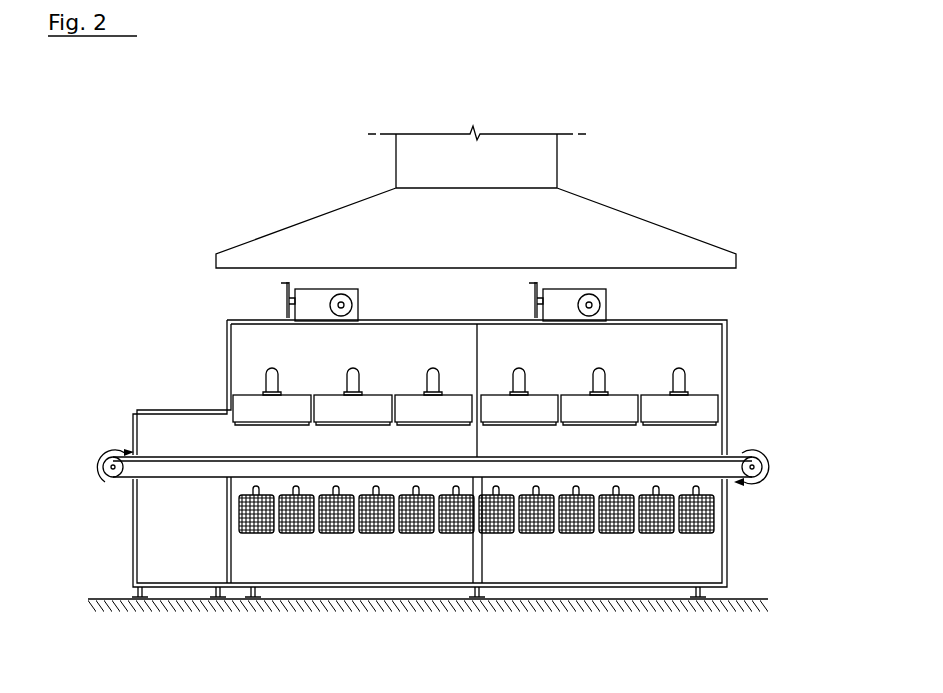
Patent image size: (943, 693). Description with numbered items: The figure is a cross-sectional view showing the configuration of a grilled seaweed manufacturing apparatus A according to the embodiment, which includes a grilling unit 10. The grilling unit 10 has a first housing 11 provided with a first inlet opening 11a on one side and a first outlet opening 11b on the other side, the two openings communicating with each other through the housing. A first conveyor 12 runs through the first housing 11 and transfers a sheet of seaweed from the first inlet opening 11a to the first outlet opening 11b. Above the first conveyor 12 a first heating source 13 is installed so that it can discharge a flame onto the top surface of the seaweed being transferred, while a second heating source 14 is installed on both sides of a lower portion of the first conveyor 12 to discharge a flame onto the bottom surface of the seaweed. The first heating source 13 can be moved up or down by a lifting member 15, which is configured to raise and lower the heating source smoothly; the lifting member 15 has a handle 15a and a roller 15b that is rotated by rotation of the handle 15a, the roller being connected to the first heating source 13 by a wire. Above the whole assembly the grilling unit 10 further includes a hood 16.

The grilled seaweed manufacturing apparatus A is at (250, 150).
The grilling unit 10 is at (722, 306).
The first housing 11 is at (728, 540).
The first inlet opening 11a is at (127, 447).
The first outlet opening 11b is at (728, 437).
The first conveyor 12 is at (155, 455).
The first heating source 13 is at (703, 393).
The second heating source 14 is at (617, 533).
The lifting member 15 is at (128, 275).
The handle 15a is at (285, 297).
The roller 15b is at (333, 312).
The hood 16 is at (640, 215).